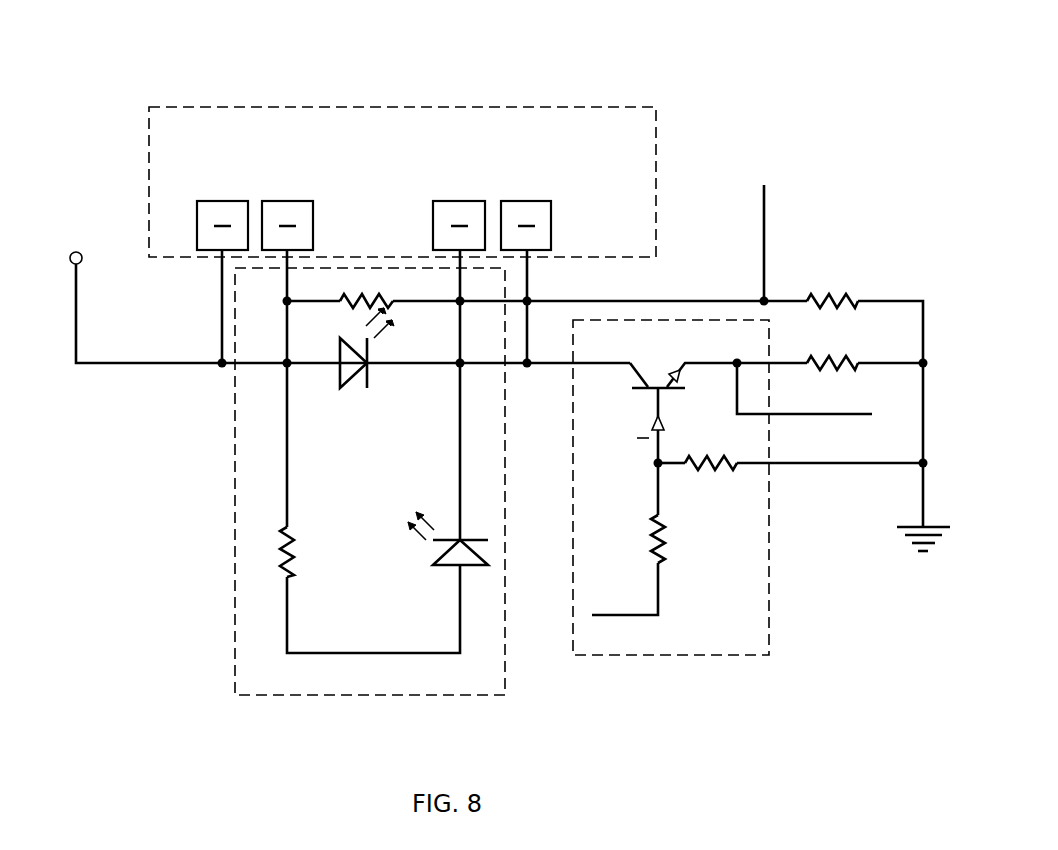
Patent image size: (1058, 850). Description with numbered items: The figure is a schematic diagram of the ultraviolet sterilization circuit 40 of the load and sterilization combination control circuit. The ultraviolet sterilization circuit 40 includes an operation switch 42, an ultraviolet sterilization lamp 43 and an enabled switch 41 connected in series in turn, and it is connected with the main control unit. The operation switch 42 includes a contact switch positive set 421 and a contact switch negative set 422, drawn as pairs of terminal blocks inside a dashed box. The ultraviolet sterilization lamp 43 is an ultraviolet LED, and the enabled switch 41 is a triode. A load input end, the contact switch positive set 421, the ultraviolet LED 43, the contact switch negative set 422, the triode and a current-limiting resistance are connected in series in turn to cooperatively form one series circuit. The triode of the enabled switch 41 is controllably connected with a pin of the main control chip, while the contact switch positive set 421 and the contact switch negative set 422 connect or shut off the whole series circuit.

The ultraviolet sterilization circuit 40 is at (570, 72).
The enabled switch 41 is at (770, 570).
The operation switch 42 is at (413, 107).
The contact switch positive set 421 is at (243, 182).
The contact switch negative set 422 is at (491, 180).
The ultraviolet sterilization lamp 43 is at (233, 537).